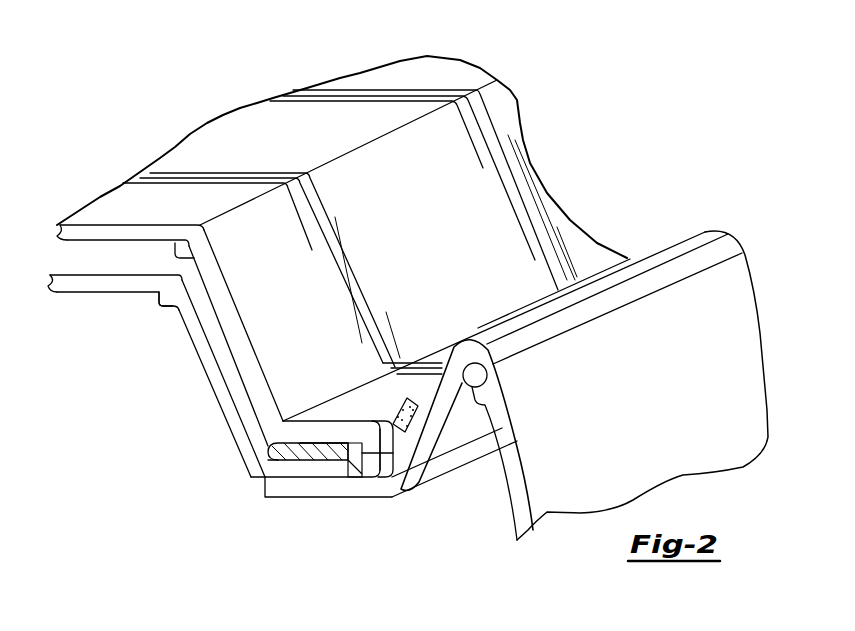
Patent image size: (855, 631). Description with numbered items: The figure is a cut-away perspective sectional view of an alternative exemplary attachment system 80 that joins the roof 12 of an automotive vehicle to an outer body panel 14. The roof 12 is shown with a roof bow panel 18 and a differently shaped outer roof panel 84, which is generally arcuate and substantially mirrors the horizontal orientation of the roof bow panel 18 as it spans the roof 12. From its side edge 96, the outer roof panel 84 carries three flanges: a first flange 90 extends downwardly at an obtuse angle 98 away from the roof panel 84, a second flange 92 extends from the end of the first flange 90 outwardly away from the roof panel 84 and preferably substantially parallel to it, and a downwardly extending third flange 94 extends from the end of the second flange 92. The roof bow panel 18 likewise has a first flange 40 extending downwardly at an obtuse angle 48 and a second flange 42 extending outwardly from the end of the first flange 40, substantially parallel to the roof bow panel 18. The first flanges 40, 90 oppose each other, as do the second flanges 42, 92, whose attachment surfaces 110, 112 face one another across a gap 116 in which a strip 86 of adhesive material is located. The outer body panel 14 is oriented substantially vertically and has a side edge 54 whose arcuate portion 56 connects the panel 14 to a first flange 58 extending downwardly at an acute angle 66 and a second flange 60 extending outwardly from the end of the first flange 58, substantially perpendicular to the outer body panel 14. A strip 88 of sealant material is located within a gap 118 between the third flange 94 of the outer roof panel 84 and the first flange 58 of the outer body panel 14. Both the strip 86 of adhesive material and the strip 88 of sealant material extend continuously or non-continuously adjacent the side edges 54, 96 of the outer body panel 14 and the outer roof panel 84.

The roof 12 is at (379, 88).
The outer body panel 14 is at (626, 457).
The roof bow panel 18 is at (122, 269).
The first flange 40 is at (203, 357).
The second flange 42 is at (256, 474).
The obtuse angle 48 is at (160, 307).
The side edge 54 is at (485, 482).
The arcuate portion 56 is at (496, 363).
The first flange 58 is at (417, 447).
The second flange 60 is at (317, 492).
The acute angle 66 is at (490, 404).
The attachment system 80 is at (462, 67).
The outer roof panel 84 is at (154, 213).
The strip of adhesive material 86 is at (294, 462).
The strip of sealant material 88 is at (400, 398).
The first flange 90 is at (304, 339).
The second flange 92 is at (377, 414).
The third flange 94 is at (373, 457).
The side edge 96 is at (328, 155).
The obtuse angle 98 is at (173, 259).
The attachment surface 110 is at (272, 457).
The attachment surface 112 is at (306, 441).
The gap 116 is at (353, 452).
The gap 118 is at (395, 463).